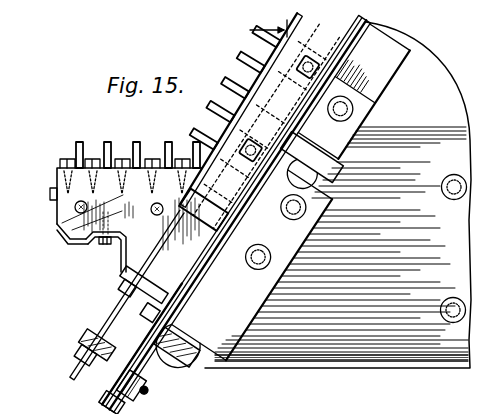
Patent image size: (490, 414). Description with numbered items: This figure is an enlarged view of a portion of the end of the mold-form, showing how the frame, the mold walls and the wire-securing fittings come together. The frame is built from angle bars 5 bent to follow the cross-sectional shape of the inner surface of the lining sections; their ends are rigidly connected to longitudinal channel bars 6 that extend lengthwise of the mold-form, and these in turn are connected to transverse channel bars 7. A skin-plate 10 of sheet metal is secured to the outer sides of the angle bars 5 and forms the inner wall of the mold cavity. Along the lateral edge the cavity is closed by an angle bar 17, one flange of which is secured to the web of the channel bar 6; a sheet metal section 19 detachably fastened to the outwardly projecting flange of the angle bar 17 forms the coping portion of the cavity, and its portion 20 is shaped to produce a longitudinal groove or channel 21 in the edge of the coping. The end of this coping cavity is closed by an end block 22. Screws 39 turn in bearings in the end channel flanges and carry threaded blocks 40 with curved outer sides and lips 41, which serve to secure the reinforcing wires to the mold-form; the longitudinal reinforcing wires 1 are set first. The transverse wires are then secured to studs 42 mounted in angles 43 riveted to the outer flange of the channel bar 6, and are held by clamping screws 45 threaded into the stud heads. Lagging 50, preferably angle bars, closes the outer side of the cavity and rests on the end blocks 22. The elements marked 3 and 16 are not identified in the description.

The longitudinal reinforcing wires 1 is at (121, 311).
The fastening screws 3 is at (151, 206).
The angle bars 5 is at (380, 76).
The channel bars 6 is at (165, 333).
The transverse channel bars 7 is at (412, 330).
The skin-plate 10 is at (363, 28).
The direction of movement arrow 16 is at (46, 387).
The angle bars 17 is at (158, 290).
The sheet metal sections 19 is at (68, 242).
The portions 20 is at (118, 266).
The longitudinal grooves or channels 21 is at (103, 246).
The end blocks 22 is at (58, 229).
The screws 39 is at (313, 66).
The blocks 40 is at (212, 134).
The lips 41 is at (238, 108).
The studs 42 is at (146, 392).
The angles 43 is at (105, 394).
The clamping screws 45 is at (76, 346).
The lagging 50 is at (232, 78).